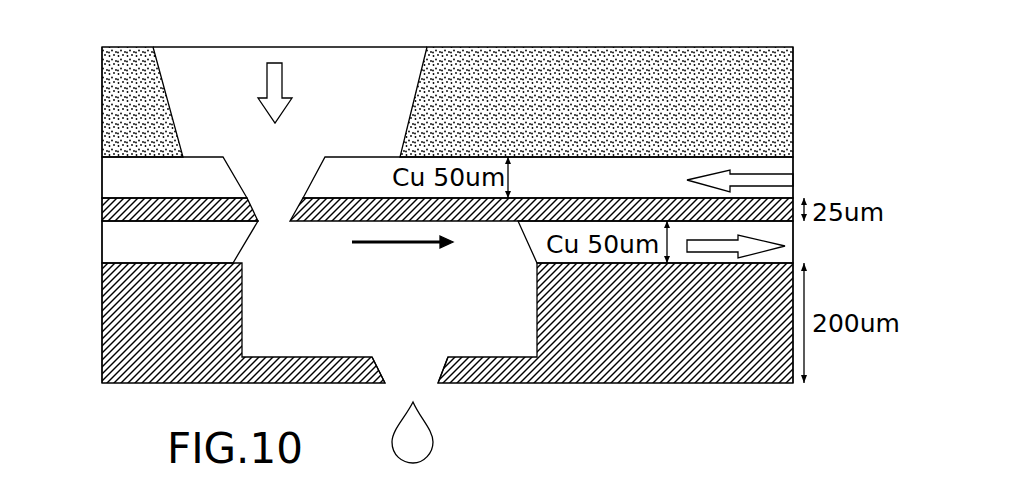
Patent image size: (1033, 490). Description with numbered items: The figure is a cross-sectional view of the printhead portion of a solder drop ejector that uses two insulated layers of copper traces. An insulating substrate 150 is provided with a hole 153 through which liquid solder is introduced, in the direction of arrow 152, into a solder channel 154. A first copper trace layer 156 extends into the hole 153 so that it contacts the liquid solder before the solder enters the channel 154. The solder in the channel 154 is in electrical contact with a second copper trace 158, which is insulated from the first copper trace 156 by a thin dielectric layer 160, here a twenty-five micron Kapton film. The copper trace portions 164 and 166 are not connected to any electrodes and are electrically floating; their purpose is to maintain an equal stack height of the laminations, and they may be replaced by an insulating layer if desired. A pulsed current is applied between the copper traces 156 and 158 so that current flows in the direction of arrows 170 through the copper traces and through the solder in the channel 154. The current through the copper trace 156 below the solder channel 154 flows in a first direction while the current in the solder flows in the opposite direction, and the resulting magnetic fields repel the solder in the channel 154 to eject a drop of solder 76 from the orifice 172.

The drop of solder 76 is at (420, 446).
The insulating substrate 150 is at (693, 58).
The arrow 152 is at (268, 79).
The hole 153 is at (362, 60).
The solder channel 154 is at (447, 323).
The first copper trace layer 156 is at (372, 165).
The second copper trace 158 is at (530, 251).
The dielectric layer 160 is at (315, 205).
The copper trace portion 164 is at (105, 175).
The copper trace portion 166 is at (105, 238).
The arrows 170 is at (793, 174).
The orifice 172 is at (415, 380).